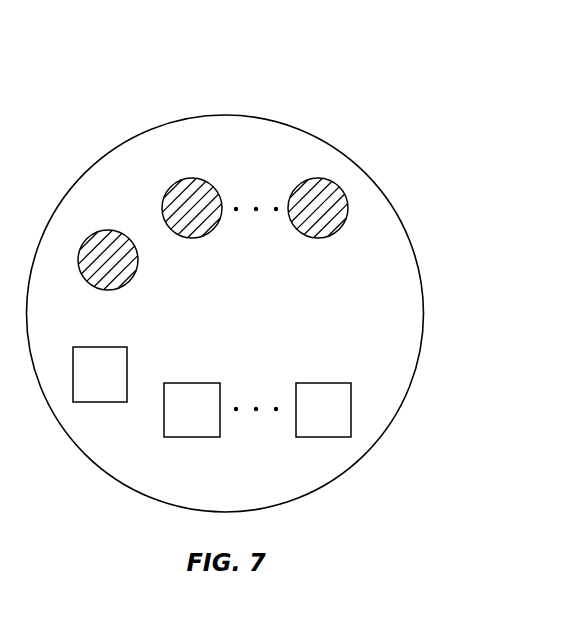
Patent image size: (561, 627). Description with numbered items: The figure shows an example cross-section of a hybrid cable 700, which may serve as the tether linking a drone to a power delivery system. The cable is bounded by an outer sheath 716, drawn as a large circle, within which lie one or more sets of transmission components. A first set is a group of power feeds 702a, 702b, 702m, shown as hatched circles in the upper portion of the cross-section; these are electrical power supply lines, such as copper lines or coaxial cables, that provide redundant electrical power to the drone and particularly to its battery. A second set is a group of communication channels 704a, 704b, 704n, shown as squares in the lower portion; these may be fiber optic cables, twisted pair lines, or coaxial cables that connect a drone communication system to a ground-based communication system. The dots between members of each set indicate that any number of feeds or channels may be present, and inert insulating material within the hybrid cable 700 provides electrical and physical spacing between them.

The hybrid cable 700 is at (57, 54).
The outer sheath 716 is at (399, 212).
The power feed 702a is at (115, 231).
The power feed 702b is at (194, 239).
The power feed 702m is at (322, 239).
The communication channel 704a is at (108, 403).
The communication channel 704b is at (188, 383).
The communication channel 704n is at (318, 383).